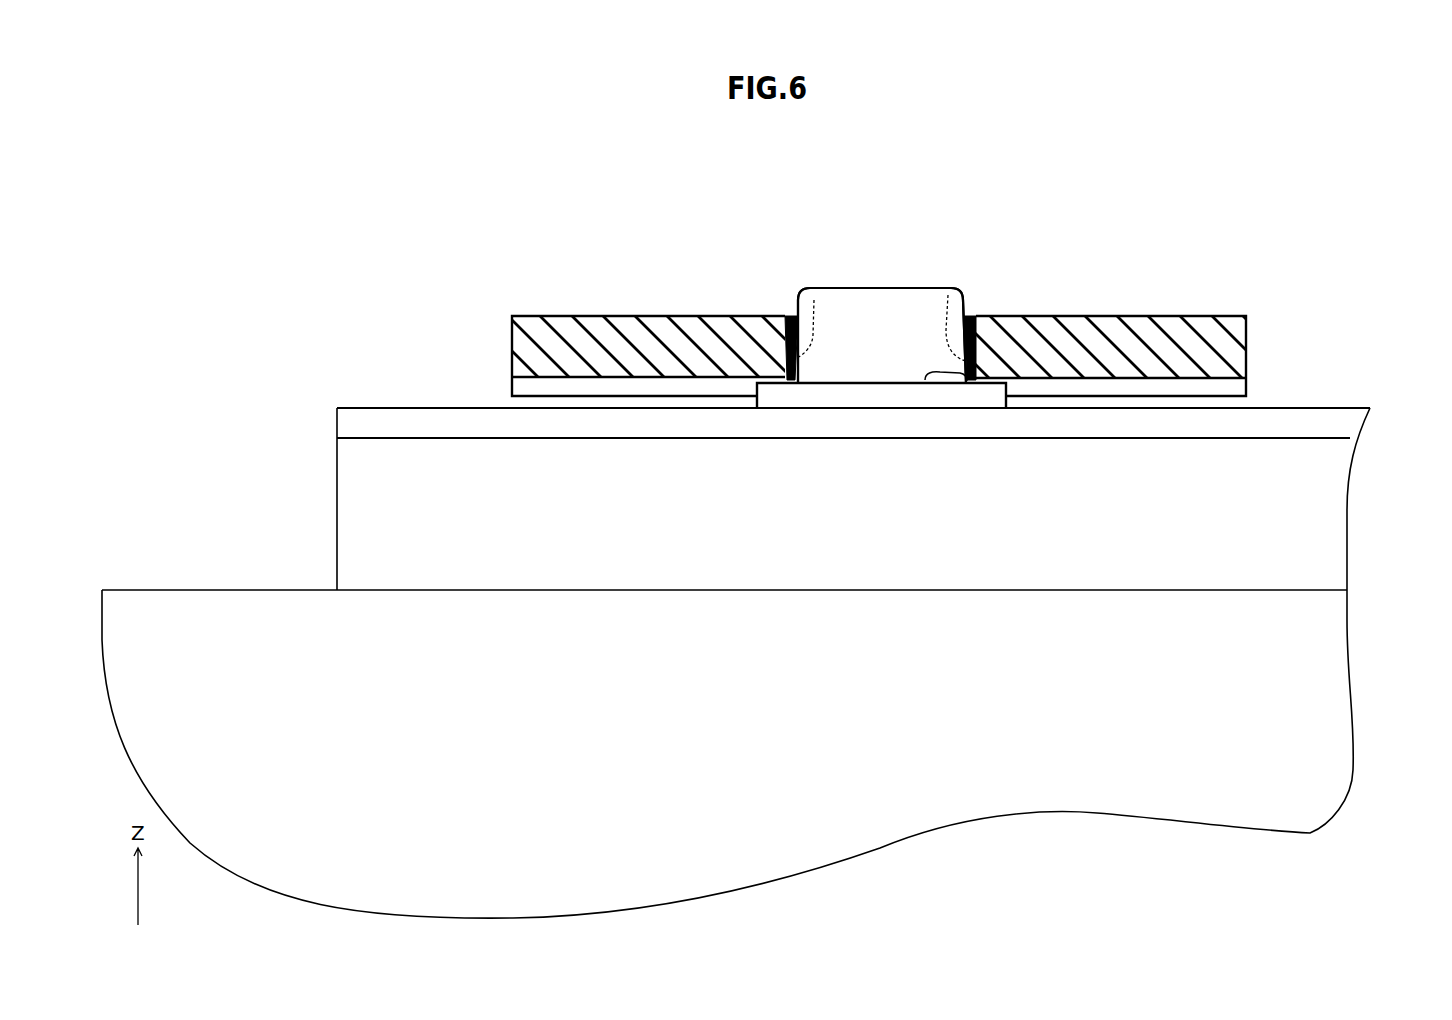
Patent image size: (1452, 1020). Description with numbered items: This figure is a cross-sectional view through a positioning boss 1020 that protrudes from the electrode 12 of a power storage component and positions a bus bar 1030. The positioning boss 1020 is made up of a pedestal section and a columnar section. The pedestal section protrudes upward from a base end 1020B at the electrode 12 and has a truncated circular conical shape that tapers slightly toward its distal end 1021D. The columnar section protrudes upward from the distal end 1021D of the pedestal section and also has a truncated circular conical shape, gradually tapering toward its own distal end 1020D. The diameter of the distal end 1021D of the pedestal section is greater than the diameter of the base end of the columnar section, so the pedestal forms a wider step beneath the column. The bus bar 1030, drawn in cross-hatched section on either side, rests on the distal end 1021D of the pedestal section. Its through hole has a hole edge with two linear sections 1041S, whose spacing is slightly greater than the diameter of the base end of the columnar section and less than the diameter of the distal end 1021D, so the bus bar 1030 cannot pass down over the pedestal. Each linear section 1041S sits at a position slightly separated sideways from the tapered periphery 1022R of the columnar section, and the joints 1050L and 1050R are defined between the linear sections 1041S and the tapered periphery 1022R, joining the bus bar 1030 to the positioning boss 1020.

The electrode 12 is at (769, 623).
The positioning boss 1020 is at (886, 283).
The base end 1020B is at (925, 408).
The distal end 1020D is at (913, 287).
The distal end 1021D is at (1006, 385).
The tapered periphery 1022R is at (866, 322).
The bus bar 1030 is at (553, 316).
The linear sections 1041S is at (948, 295).
The joint 1050L is at (970, 316).
The joint 1050R is at (788, 316).